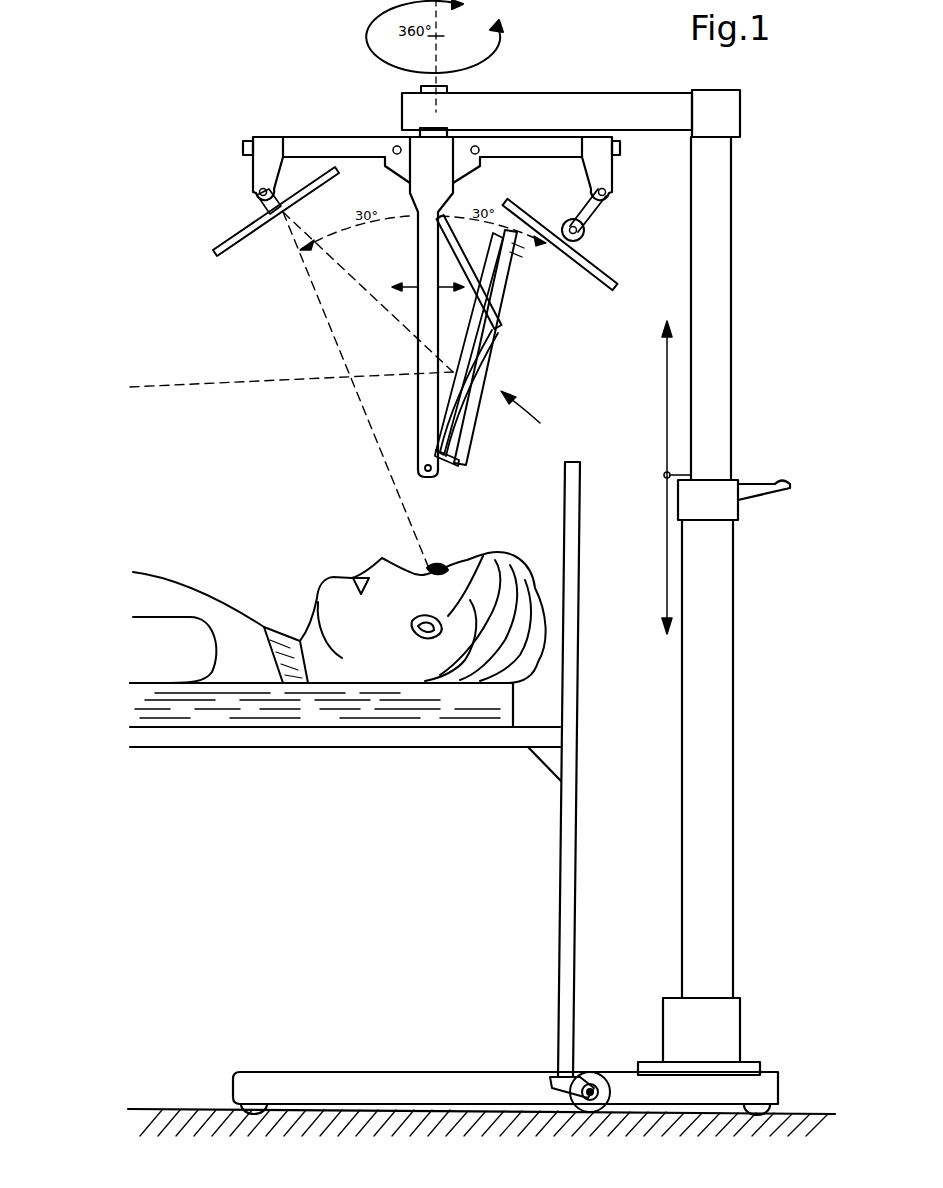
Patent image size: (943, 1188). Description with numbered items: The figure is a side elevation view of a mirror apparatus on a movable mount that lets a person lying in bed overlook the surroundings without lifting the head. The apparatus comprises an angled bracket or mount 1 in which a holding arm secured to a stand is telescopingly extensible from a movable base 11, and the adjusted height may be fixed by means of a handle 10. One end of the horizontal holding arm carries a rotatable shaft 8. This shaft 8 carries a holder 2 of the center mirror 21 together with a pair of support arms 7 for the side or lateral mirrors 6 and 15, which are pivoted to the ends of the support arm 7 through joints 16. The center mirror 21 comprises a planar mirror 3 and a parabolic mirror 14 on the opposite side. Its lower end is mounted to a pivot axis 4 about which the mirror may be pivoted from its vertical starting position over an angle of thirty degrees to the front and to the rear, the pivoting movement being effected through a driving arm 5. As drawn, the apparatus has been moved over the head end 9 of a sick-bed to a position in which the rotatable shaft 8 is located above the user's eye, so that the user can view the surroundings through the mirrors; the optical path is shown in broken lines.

The angled bracket or mount 1 is at (725, 406).
The holder 2 is at (441, 152).
The planar mirror 3 is at (497, 277).
The pivot axis 4 is at (434, 470).
The driving arm 5 is at (458, 258).
The lateral mirror 6 is at (238, 238).
The support arm 7 is at (329, 148).
The rotatable shaft 8 is at (428, 135).
The head end 9 is at (567, 836).
The handle 10 is at (747, 492).
The movable base 11 is at (725, 671).
The parabolic mirror 14 is at (494, 358).
The lateral mirror 15 is at (584, 238).
The joint 16 is at (599, 148).
The center mirror 21 is at (537, 418).